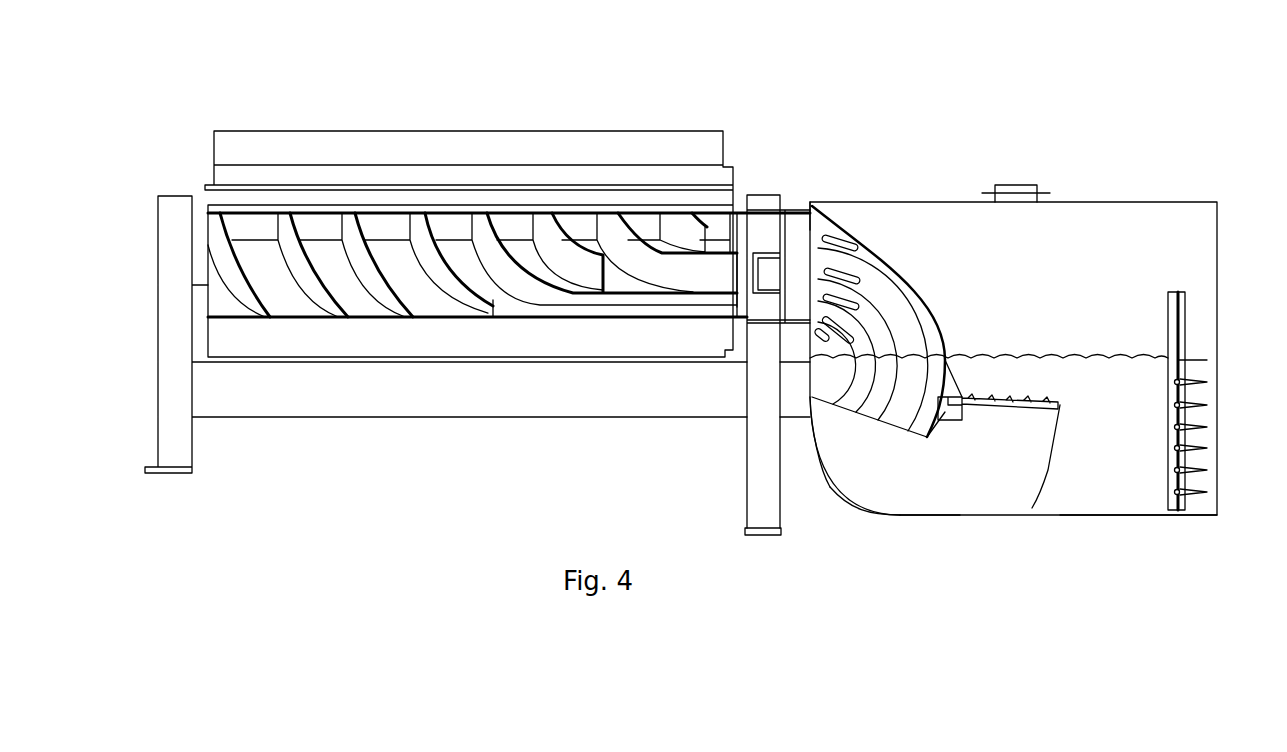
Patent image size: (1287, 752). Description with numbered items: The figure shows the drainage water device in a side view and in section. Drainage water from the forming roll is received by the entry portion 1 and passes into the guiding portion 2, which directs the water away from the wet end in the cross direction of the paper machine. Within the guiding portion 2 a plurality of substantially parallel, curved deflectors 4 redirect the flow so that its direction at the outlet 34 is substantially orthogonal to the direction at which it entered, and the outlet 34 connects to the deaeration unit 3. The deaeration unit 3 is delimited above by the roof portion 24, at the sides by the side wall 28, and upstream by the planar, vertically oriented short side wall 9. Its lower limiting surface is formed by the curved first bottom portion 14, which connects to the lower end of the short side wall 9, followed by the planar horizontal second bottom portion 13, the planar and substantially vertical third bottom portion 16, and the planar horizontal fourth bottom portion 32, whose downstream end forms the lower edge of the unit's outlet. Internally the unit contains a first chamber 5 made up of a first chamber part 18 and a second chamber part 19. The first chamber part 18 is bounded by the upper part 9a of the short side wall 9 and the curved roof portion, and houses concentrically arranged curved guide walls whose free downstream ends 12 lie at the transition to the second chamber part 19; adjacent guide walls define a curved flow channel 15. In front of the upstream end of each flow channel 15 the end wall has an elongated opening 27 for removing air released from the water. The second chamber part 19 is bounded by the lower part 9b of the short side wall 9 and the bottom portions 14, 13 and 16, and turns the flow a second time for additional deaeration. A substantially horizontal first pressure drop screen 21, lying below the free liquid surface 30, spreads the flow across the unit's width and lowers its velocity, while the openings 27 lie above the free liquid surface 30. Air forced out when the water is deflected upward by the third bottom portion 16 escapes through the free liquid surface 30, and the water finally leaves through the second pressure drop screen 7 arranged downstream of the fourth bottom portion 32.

The entry portion 1 is at (474, 154).
The guiding portion 2 is at (395, 386).
The deaeration unit 3 is at (1022, 160).
The curved deflectors 4 is at (530, 287).
The first chamber 5 is at (877, 490).
The second pressure drop screen 7 is at (1177, 493).
The short side wall 9 is at (801, 392).
The upper part of the short side wall 9a is at (813, 230).
The lower part of the short side wall 9b is at (815, 458).
The free downstream end 12 is at (883, 415).
The second bottom portion 13 is at (910, 514).
The first bottom portion 14 is at (828, 487).
The curved flow channel 15 is at (908, 318).
The third bottom portion 16 is at (1050, 470).
The first chamber part 18 is at (873, 287).
The second chamber part 19 is at (955, 492).
The first pressure drop screen 21 is at (1045, 400).
The roof portion 24 is at (1090, 202).
The opening 27 is at (841, 238).
The side wall 28 is at (1062, 273).
The free liquid surface 30 is at (985, 357).
The fourth bottom portion 32 is at (1103, 515).
The outlet 34 is at (740, 290).